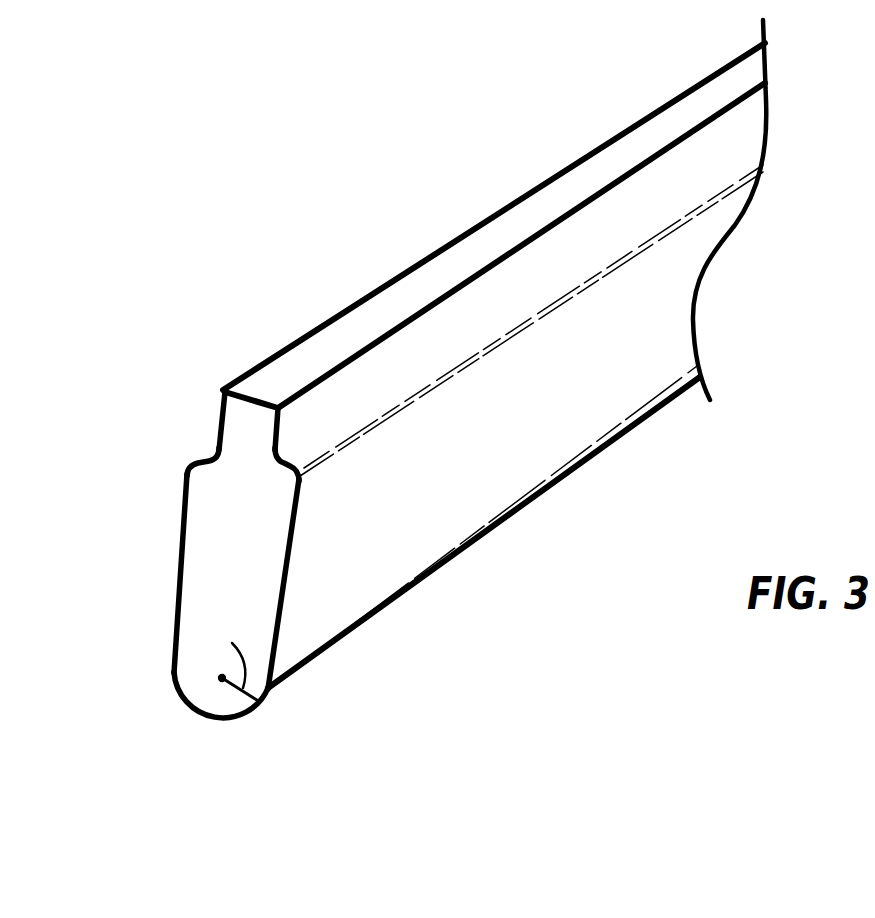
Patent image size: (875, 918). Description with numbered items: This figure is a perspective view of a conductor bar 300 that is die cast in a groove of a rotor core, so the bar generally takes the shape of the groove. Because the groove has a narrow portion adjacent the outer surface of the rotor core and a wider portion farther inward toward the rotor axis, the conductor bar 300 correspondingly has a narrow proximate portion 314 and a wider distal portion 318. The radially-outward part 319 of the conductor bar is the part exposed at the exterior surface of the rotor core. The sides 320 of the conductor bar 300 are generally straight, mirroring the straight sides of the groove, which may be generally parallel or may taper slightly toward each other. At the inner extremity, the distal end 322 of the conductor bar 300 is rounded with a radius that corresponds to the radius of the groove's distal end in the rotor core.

The conductor bar 300 is at (409, 369).
The narrow proximate portion 314 is at (202, 430).
The wider distal portion 318 is at (222, 564).
The radially-outward part 319 is at (412, 300).
The sides 320 is at (168, 648).
The distal end 322 is at (440, 597).